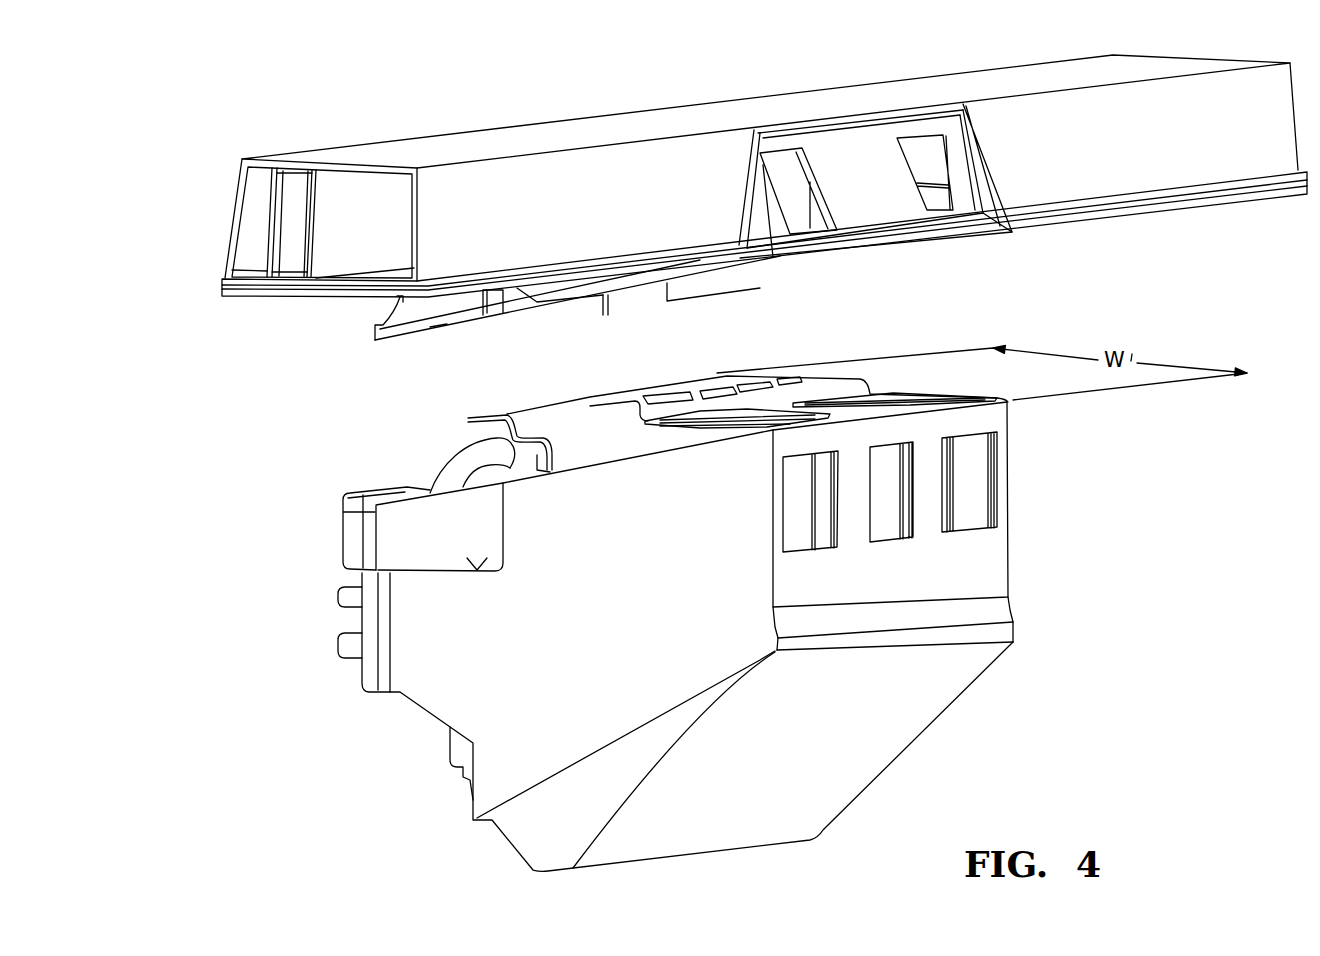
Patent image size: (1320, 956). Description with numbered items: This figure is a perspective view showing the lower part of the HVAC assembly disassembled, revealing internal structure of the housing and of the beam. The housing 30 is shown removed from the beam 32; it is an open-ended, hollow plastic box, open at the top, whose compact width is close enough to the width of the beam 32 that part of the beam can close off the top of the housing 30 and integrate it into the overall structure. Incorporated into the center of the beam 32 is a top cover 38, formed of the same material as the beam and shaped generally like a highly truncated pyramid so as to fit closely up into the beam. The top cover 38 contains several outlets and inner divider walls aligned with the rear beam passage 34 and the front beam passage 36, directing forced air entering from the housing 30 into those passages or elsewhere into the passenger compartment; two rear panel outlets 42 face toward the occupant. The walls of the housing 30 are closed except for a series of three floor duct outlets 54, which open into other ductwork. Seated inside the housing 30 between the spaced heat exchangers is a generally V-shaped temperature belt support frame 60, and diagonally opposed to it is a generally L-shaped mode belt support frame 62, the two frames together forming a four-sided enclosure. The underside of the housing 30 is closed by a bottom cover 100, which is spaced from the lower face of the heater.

The housing 30 is at (429, 728).
The beam 32 is at (418, 139).
The rear beam passage 34 is at (375, 241).
The front beam passage 36 is at (258, 228).
The top cover 38 is at (1005, 246).
The rear panel outlets 42 is at (803, 230).
The floor duct outlets 54 is at (803, 457).
The temperature belt support frame 60 is at (503, 400).
The mode belt support frame 62 is at (733, 365).
The bottom cover 100 is at (893, 737).